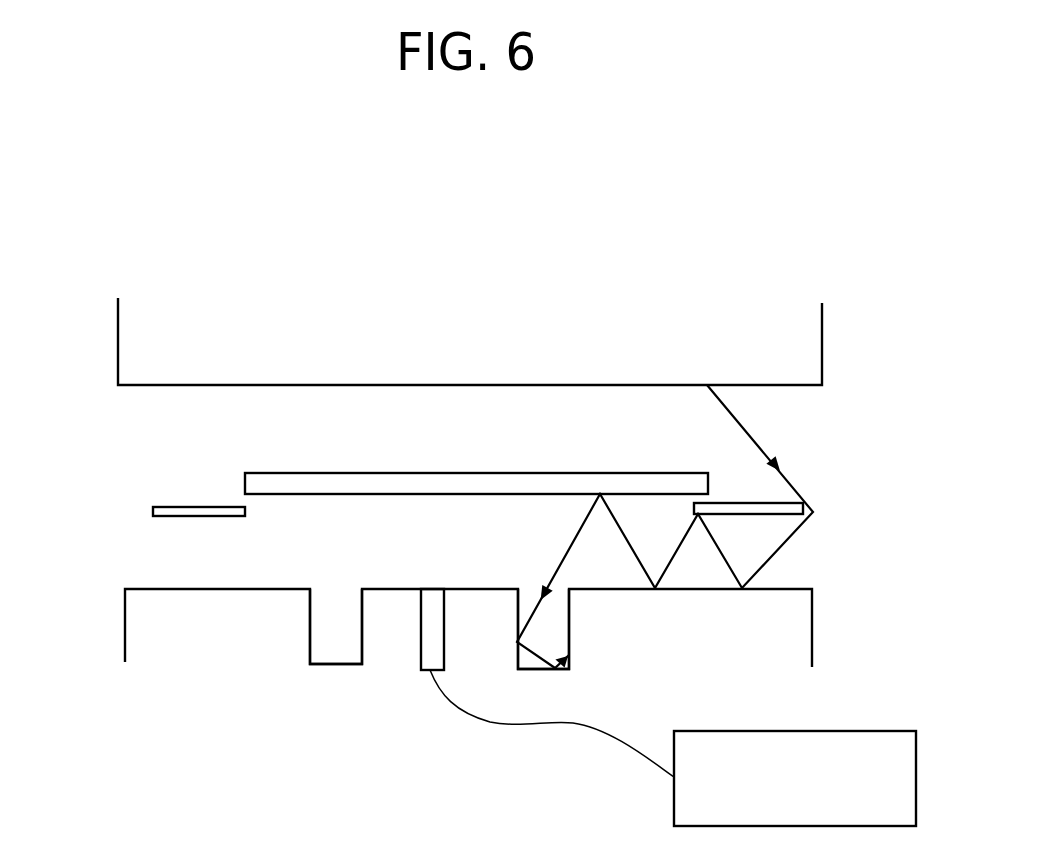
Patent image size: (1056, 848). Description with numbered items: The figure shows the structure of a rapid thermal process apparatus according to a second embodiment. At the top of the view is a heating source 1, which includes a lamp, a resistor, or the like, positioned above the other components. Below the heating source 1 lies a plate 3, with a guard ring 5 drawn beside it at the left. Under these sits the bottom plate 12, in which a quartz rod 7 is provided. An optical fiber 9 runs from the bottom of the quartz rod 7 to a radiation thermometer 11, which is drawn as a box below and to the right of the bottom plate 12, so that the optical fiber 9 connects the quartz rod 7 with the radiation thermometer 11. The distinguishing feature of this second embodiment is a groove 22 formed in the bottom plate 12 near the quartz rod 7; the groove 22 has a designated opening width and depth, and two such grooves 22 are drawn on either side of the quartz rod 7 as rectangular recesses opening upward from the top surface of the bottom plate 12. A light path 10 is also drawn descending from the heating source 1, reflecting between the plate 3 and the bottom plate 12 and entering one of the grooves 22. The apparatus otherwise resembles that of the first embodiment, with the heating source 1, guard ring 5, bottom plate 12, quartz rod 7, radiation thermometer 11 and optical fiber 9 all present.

The heating source 1 is at (822, 343).
The plate 3 is at (245, 483).
The guard ring 5 is at (153, 511).
The quartz rod 7 is at (422, 670).
The optical fiber 9 is at (490, 722).
The light beam 10 is at (750, 435).
The radiation thermometer 11 is at (916, 800).
The bottom plate 12 is at (812, 625).
The groove 22 is at (310, 630).